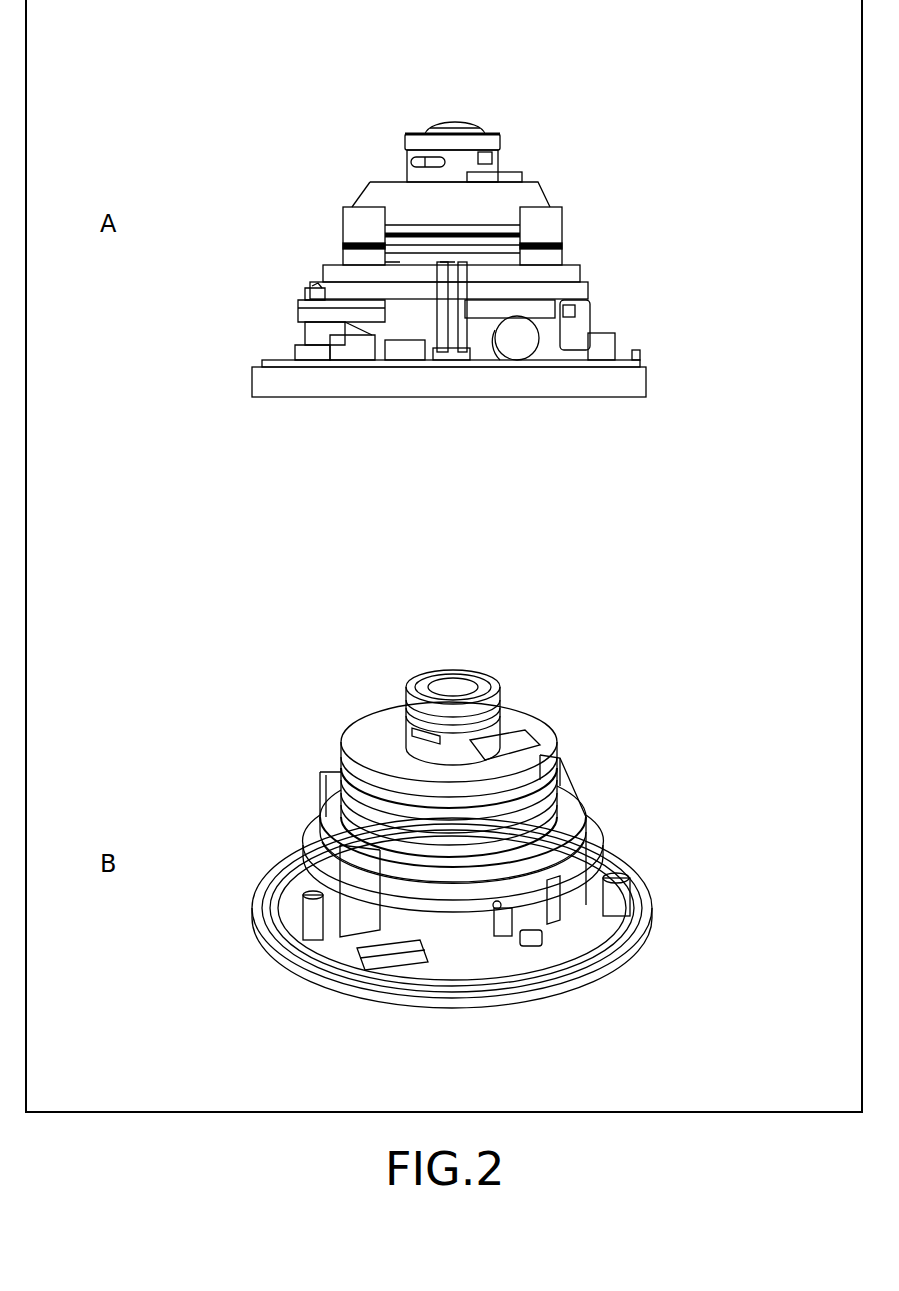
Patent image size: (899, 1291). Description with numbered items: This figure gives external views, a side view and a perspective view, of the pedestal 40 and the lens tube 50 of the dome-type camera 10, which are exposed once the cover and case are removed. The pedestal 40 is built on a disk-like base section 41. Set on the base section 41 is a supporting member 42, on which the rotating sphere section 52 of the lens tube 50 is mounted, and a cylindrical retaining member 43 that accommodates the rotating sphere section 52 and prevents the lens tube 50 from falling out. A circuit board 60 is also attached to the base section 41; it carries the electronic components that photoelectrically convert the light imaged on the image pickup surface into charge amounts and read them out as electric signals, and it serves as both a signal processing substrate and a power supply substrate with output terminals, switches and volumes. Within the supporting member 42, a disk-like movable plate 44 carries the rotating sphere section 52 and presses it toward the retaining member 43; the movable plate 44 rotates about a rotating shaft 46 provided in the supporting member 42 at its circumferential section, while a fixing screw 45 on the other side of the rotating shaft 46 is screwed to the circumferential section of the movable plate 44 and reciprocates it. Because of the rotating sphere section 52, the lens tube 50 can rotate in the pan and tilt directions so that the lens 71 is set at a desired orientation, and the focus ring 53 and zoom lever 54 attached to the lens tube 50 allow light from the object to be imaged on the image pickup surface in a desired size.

The dome-type camera 10 is at (388, 92).
The lens 71 is at (470, 120).
The lens tube 50 is at (475, 155).
The focus ring 53 is at (405, 150).
The zoom lever 54 is at (405, 160).
The rotating sphere section 52 is at (530, 200).
The retaining member 43 is at (548, 235).
The supporting member 42 is at (575, 290).
The fixing screw 45 is at (312, 288).
The movable plate 44 is at (298, 310).
The rotating shaft 46 is at (565, 312).
The circuit board 60 is at (640, 360).
The pedestal 40 is at (499, 701).
The base section 41 is at (605, 388).